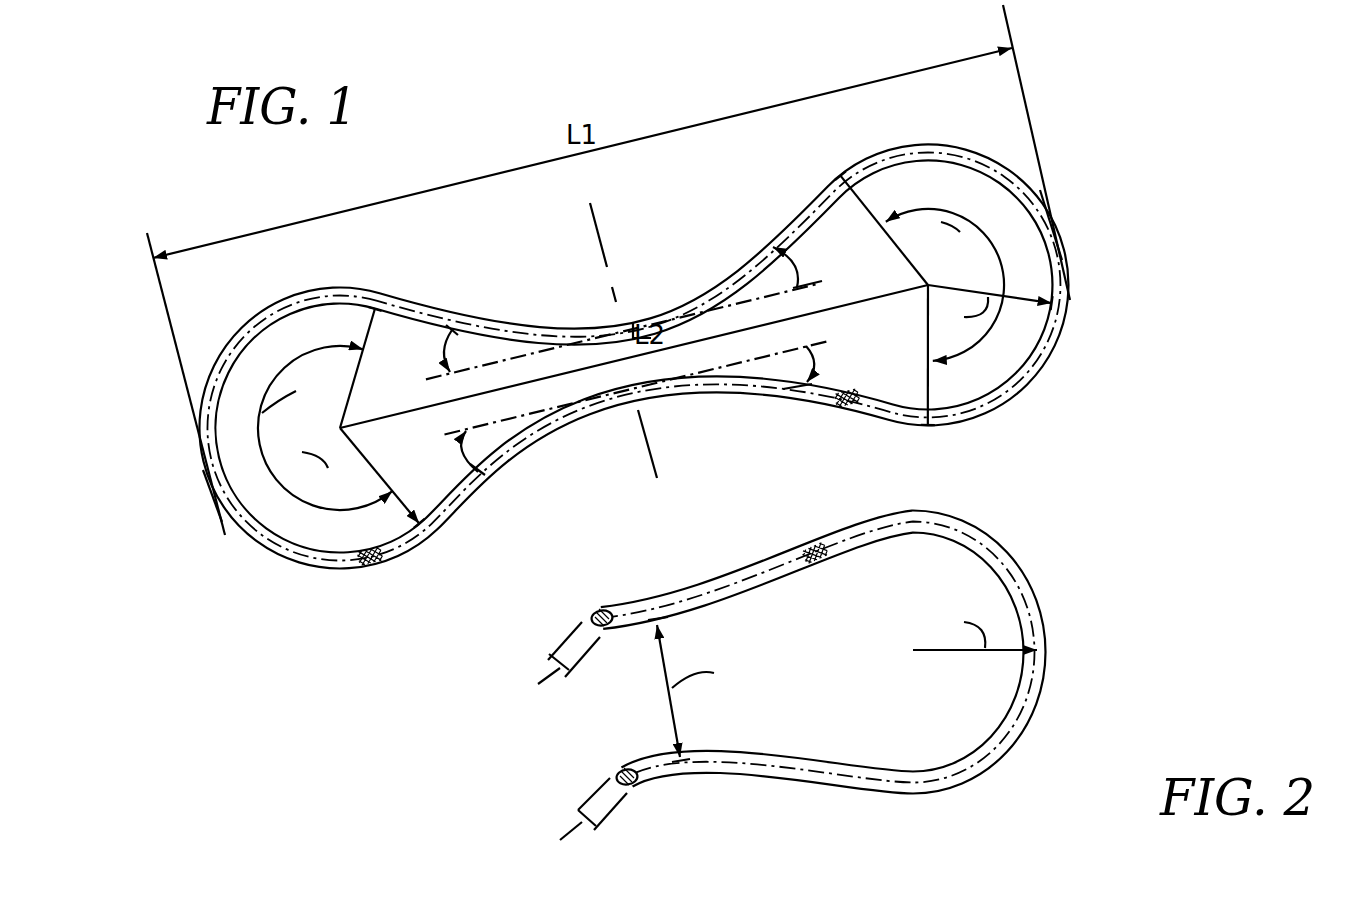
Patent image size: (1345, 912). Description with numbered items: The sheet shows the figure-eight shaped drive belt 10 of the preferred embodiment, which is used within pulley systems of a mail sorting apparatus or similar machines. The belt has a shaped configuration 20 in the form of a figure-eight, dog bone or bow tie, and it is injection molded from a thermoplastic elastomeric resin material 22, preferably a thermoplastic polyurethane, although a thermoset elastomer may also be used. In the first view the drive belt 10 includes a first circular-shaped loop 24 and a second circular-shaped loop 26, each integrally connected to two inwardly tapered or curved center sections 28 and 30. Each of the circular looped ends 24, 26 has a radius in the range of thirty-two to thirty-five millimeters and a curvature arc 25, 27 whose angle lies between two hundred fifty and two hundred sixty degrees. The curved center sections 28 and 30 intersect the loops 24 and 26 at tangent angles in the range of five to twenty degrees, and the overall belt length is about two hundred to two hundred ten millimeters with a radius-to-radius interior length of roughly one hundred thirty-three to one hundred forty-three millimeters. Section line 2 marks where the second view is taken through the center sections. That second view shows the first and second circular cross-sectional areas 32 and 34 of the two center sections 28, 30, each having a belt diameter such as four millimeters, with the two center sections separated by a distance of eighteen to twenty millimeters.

In FIG. 1, the figure-eight shaped drive belt 10 is at (634, 356).
In FIG. 2, the figure-eight shaped drive belt 10 is at (818, 681).
In FIG. 1, the shaped configuration 20 is at (310, 278).
In FIG. 2, the shaped configuration 20 is at (962, 790).
In FIG. 1, the thermoplastic elastomeric resin material 22 is at (367, 568).
In FIG. 2, the thermoplastic elastomeric resin material 22 is at (823, 558).
In FIG. 1, the first circular-shaped loop 24 is at (225, 517).
In FIG. 1, the curvature arc 25 is at (285, 373).
In FIG. 1, the second circular-shaped loop 26 is at (1012, 178).
In FIG. 2, the second circular-shaped loop 26 is at (1012, 567).
In FIG. 1, the curvature arc 27 is at (910, 203).
In FIG. 1, the first inwardly tapered center section 28 is at (600, 336).
In FIG. 2, the first inwardly tapered center section 28 is at (628, 618).
In FIG. 1, the second inwardly tapered center section 30 is at (613, 405).
In FIG. 2, the second inwardly tapered center section 30 is at (662, 770).
In FIG. 2, the first circular cross-sectional area 32 is at (590, 617).
In FIG. 2, the second circular cross-sectional area 34 is at (618, 777).
In FIG. 1, the section line 2— 2 is at (590, 203).